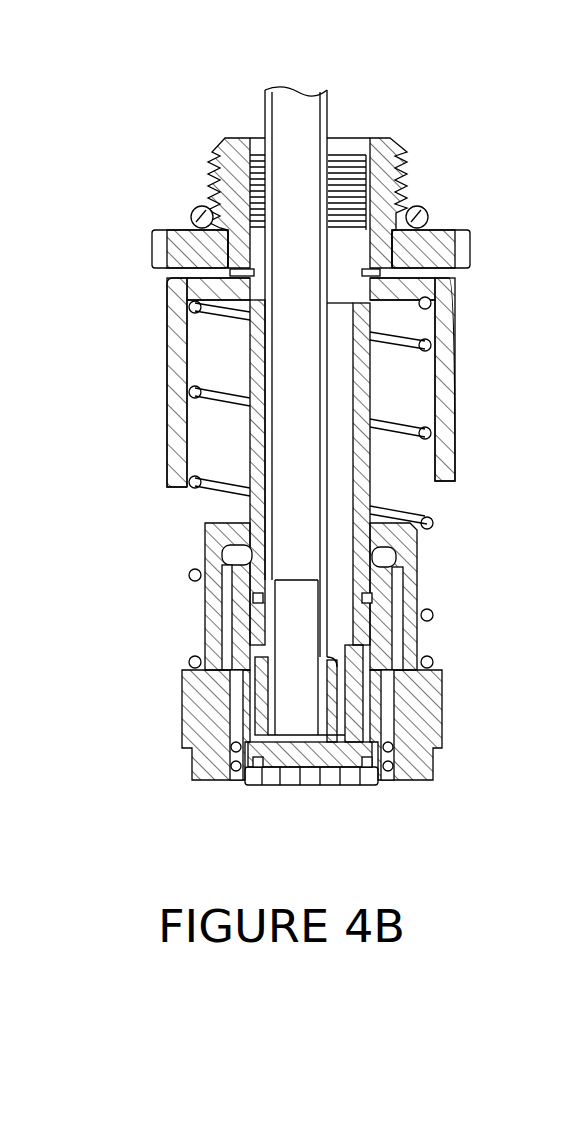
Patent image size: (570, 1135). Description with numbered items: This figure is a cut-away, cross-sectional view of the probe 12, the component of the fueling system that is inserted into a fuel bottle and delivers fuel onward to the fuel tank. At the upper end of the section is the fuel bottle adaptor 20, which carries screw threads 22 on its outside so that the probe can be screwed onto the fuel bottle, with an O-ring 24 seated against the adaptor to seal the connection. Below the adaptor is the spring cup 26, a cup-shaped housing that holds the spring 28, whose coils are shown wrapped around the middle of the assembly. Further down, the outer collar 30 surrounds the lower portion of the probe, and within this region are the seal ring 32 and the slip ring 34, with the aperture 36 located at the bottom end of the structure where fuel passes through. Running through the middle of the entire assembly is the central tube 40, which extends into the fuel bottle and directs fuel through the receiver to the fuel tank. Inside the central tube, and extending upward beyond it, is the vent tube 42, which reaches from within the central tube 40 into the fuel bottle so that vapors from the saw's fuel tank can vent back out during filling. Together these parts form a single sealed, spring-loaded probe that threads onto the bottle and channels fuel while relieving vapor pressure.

The probe 12 is at (187, 120).
The fuel bottle adaptor 20 is at (163, 250).
The screw threads 22 is at (217, 163).
The O-ring 24 is at (427, 213).
The spring cup 26 is at (180, 302).
The spring 28 is at (188, 392).
The outer collar 30 is at (400, 540).
The seal ring 32 is at (398, 672).
The slip ring 34 is at (235, 552).
The aperture 36 is at (330, 792).
The central tube 40 is at (360, 462).
The vent tube 42 is at (325, 118).